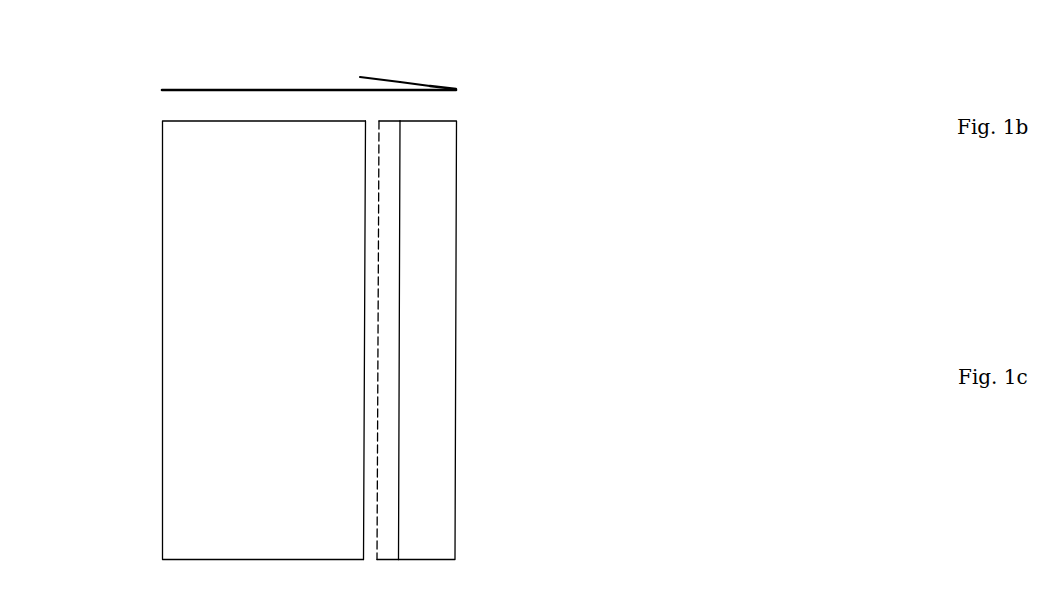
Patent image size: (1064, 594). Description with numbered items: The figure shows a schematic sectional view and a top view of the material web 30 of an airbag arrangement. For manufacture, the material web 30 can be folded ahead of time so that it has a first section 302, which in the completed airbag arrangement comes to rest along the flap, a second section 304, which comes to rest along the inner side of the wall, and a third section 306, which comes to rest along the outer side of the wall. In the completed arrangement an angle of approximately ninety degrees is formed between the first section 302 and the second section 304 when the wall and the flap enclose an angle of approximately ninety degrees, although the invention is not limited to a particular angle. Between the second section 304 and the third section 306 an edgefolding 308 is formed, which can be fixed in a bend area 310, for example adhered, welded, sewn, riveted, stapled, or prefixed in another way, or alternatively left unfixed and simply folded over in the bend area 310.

In FIG. 1B, the material web 30 is at (514, 96).
In FIG. 1C, the material web 30 is at (534, 315).
In FIG. 1B, the first section 302 is at (213, 88).
In FIG. 1C, the first section 302 is at (195, 308).
In FIG. 1B, the second section 304 is at (423, 87).
In FIG. 1C, the second section 304 is at (433, 492).
In FIG. 1B, the third section 306 is at (385, 75).
In FIG. 1C, the third section 306 is at (388, 255).
In FIG. 1B, the edgefolding 308 is at (362, 77).
In FIG. 1C, the edgefolding 308 is at (363, 410).
In FIG. 1C, the bend area 310 is at (370, 197).